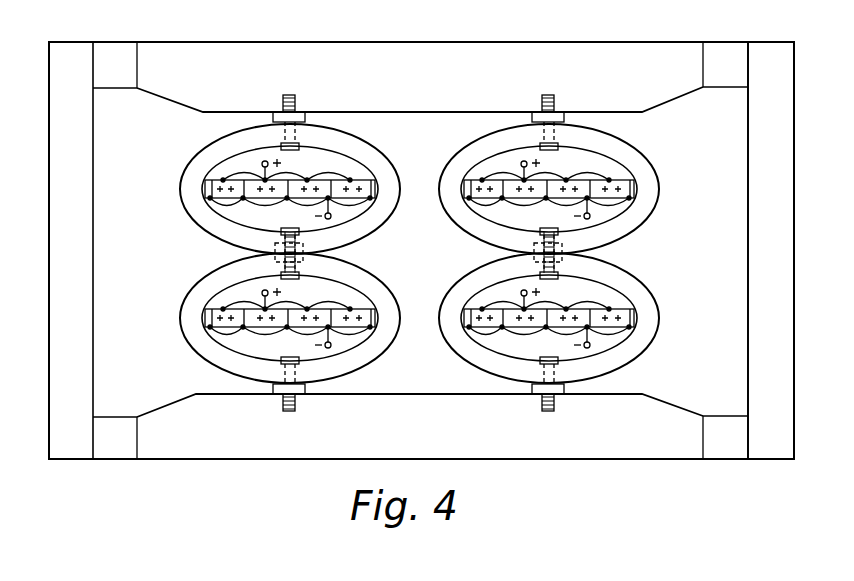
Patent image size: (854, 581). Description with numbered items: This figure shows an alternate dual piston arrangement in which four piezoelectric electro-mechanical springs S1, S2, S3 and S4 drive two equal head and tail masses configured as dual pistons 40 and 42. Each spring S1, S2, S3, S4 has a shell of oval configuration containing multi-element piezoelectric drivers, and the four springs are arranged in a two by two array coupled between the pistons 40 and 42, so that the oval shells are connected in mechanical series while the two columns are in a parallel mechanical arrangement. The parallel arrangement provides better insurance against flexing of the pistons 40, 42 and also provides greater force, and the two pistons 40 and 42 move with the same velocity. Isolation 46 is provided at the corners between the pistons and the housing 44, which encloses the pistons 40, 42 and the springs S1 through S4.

The piston 40 is at (610, 43).
The piston 42 is at (533, 455).
The housing 44 is at (770, 62).
The isolation 46 is at (116, 50).
The spring S1 is at (181, 182).
The spring S2 is at (181, 325).
The spring S3 is at (659, 183).
The spring S4 is at (659, 331).